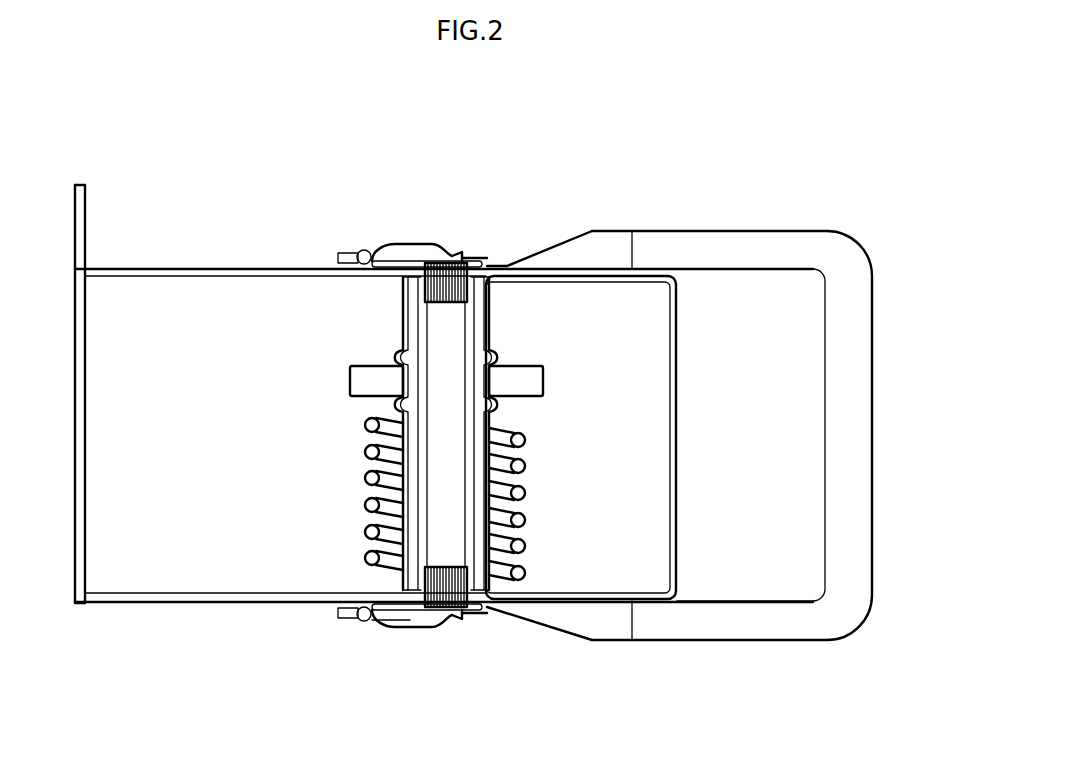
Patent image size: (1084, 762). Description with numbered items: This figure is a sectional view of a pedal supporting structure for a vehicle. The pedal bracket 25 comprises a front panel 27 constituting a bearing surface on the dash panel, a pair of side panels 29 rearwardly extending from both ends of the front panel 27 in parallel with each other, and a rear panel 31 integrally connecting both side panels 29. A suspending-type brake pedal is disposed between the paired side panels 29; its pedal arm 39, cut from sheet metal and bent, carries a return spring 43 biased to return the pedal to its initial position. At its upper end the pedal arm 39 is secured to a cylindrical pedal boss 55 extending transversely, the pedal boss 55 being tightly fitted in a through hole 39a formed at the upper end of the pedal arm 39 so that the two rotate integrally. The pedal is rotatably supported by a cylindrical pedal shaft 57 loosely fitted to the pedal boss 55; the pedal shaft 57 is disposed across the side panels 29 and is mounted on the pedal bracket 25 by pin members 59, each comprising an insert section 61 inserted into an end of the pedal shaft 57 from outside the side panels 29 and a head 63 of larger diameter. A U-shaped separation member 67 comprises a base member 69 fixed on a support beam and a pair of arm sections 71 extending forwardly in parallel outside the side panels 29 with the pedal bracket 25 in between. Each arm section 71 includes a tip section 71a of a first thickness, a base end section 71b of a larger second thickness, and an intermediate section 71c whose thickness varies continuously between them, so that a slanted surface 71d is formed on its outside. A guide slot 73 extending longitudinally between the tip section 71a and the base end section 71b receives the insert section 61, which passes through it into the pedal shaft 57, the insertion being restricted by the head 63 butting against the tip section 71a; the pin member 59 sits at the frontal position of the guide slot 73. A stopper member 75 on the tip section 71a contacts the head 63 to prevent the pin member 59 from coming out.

The pedal bracket 25 is at (130, 628).
The front panel 27 is at (86, 392).
The side panel 29 is at (170, 268).
The rear panel 31 is at (678, 428).
The pedal arm 39 is at (543, 382).
The through hole 39a is at (402, 380).
The return spring 43 is at (530, 438).
The pedal boss 55 is at (487, 419).
The pedal shaft 57 is at (422, 418).
The pin member 59 is at (488, 250).
The insert section 61 is at (447, 305).
The head 63 is at (463, 246).
The separation member 67 is at (855, 631).
The base member 69 is at (872, 404).
The arm section 71 is at (700, 231).
The tip section 71a is at (405, 630).
The base end section 71b is at (730, 640).
The intermediate section 71c is at (565, 628).
The slanted surface 71d is at (560, 240).
The guide slot 73 is at (608, 255).
The stopper member 75 is at (405, 243).